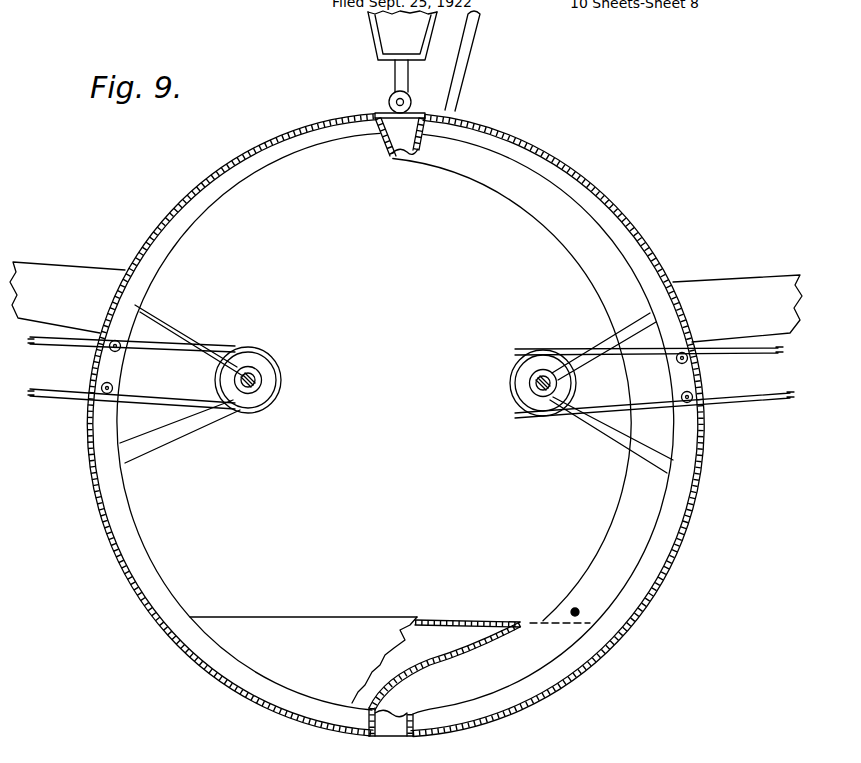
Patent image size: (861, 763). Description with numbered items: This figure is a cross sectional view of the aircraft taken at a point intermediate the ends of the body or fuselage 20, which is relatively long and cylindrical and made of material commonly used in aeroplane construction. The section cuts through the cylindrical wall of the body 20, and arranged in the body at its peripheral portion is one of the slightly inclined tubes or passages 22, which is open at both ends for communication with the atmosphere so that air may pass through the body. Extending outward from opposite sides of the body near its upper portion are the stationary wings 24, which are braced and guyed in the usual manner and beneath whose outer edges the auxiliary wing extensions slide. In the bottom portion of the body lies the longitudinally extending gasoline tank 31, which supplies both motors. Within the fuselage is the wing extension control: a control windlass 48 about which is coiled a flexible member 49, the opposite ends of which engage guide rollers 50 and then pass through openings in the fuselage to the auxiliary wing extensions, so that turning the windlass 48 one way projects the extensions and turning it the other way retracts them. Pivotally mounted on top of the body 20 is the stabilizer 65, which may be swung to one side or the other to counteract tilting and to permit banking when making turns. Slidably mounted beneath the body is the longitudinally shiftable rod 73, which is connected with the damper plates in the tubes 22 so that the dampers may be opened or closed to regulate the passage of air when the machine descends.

The body or fuselage 20 is at (147, 613).
The inclined tubes or passages 22 is at (617, 520).
The wings 24 is at (37, 287).
The gasoline tank 31 is at (320, 630).
The control windlass 48 is at (527, 373).
The flexible member 49 is at (267, 413).
The guide rollers 50 is at (110, 352).
The stabilizer 65 is at (412, 33).
The longitudinally shiftable rod 73 is at (580, 613).